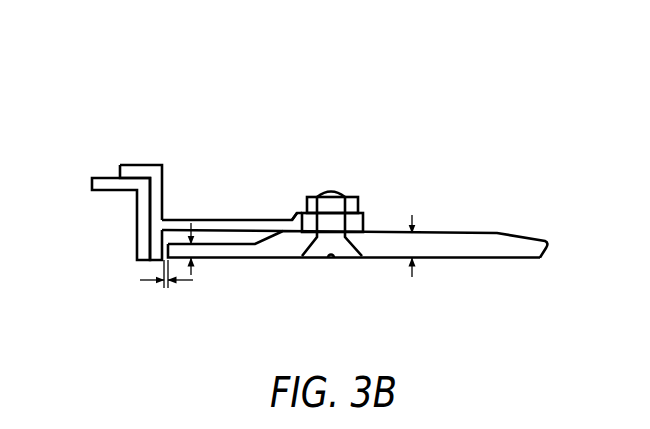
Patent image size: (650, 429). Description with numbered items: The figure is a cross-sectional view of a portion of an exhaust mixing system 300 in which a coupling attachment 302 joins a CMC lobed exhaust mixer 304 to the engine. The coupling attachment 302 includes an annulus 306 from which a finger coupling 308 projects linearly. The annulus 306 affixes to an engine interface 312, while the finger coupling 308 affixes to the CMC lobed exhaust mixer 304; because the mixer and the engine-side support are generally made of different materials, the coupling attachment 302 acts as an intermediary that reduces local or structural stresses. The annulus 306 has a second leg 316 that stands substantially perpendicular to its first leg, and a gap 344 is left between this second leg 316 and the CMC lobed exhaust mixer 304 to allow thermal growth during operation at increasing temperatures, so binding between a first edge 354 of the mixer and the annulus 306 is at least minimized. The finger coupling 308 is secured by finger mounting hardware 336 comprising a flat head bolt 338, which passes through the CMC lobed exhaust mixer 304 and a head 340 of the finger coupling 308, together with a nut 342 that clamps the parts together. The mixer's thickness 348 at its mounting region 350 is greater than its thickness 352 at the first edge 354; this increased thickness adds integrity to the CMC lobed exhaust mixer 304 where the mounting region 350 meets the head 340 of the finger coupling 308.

The exhaust mixing system 300 is at (396, 72).
The coupling attachment 302 is at (232, 84).
The CMC lobed exhaust mixer 304 is at (508, 192).
The annulus 306 is at (163, 164).
The finger coupling 308 is at (289, 159).
The engine interface 312 is at (135, 208).
The second leg 316 is at (163, 192).
The finger mounting hardware 336 is at (367, 185).
The flat head bolt 338 is at (332, 190).
The head 340 is at (365, 225).
The nut 342 is at (294, 215).
The gap 344 is at (144, 277).
The thickness 348 is at (413, 246).
The mounting region 350 is at (387, 264).
The thickness 352 is at (193, 249).
The first edge 354 is at (193, 291).